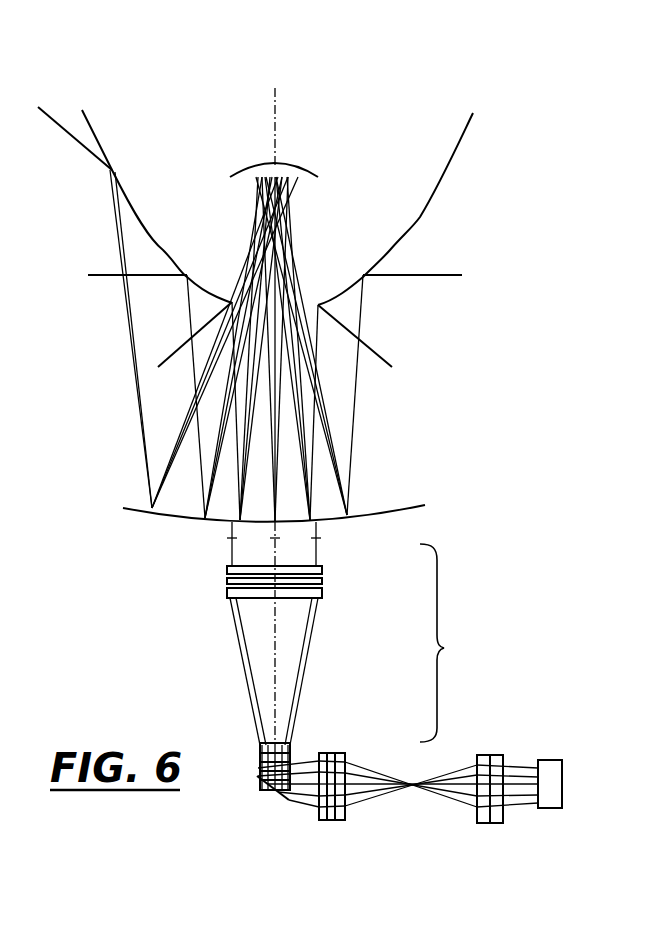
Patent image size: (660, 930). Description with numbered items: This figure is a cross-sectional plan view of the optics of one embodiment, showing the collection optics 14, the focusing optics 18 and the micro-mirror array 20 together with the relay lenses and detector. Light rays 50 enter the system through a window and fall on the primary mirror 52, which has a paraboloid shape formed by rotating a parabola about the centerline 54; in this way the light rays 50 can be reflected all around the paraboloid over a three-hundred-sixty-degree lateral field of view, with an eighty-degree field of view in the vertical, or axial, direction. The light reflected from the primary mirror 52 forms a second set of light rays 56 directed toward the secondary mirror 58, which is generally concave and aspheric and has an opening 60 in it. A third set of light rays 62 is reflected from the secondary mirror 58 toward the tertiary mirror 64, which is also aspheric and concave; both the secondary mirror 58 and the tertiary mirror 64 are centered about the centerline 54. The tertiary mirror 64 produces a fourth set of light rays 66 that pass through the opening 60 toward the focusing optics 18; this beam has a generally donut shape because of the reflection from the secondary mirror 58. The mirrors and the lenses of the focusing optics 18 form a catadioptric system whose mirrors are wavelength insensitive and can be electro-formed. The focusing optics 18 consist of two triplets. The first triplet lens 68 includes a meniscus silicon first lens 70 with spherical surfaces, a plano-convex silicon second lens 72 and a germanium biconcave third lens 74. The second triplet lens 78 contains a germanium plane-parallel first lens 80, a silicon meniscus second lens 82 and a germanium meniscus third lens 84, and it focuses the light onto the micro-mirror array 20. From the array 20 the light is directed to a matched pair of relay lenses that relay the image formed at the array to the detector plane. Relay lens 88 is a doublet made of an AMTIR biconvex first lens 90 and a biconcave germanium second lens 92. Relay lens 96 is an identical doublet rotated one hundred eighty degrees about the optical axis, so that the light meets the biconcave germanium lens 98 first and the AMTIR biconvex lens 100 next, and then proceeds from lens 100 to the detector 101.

The collection optics 14 is at (508, 184).
The focusing optics 18 is at (347, 691).
The micro-mirror array 20 is at (267, 797).
The light rays 50 is at (53, 117).
The primary mirror 52 is at (420, 217).
The centerline 54 is at (273, 113).
The second set of light rays 56 is at (134, 378).
The secondary mirror 58 is at (148, 511).
The opening 60 is at (252, 535).
The third set of light rays 62 is at (178, 438).
The tertiary mirror 64 is at (288, 166).
The fourth set of light rays 66 is at (288, 242).
The first triplet lens 68 is at (270, 647).
The first lens 70 is at (322, 572).
The second lens 72 is at (322, 583).
The third lens 74 is at (322, 595).
The second triplet lens 78 is at (248, 752).
The first lens 80 is at (292, 746).
The second lens 82 is at (291, 764).
The third lens 84 is at (291, 772).
The relay lens 88 is at (372, 831).
The first lens 90 is at (318, 822).
The second lens 92 is at (348, 823).
The relay lens 96 is at (520, 785).
The lens 98 is at (481, 755).
The lens 100 is at (497, 754).
The detector 101 is at (563, 783).